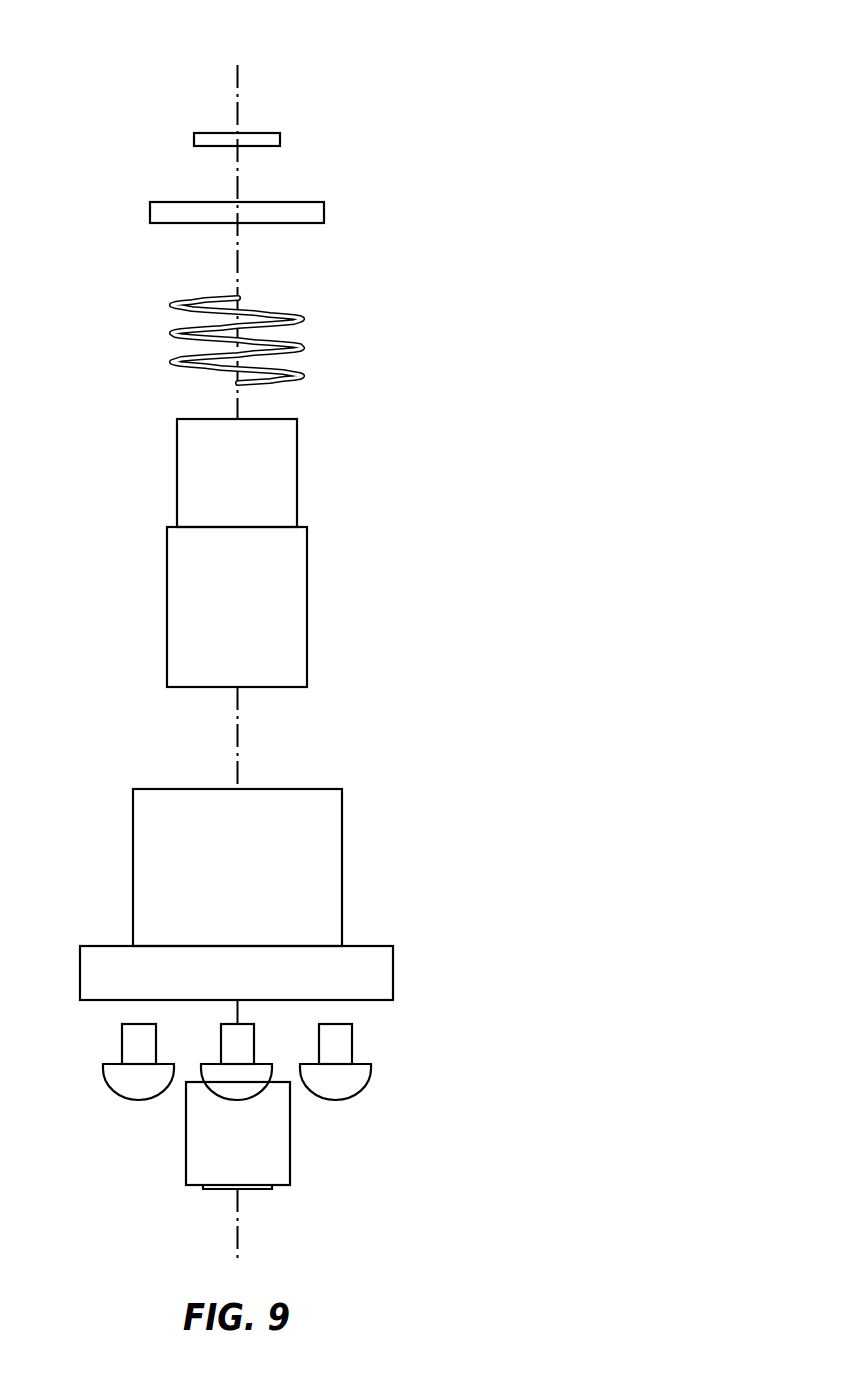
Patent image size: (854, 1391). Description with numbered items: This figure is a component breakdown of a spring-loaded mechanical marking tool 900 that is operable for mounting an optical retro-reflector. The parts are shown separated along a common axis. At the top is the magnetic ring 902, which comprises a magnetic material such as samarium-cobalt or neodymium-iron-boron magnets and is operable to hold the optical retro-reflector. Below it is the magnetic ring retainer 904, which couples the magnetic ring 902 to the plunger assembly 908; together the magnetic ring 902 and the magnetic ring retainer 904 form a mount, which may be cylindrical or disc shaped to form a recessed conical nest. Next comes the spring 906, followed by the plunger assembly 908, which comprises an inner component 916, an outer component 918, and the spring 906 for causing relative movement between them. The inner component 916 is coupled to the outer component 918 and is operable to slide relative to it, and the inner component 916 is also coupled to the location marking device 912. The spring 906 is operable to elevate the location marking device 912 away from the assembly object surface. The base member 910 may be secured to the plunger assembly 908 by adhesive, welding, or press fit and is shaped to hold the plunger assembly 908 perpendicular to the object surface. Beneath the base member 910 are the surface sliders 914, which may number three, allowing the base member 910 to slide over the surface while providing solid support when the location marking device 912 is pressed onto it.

The spring-loaded mechanical marking tool 900 is at (399, 43).
The magnetic ring 902 is at (280, 138).
The magnetic ring retainer 904 is at (324, 212).
The spring 906 is at (303, 345).
The plunger assembly 908 is at (316, 553).
The inner component 916 is at (298, 468).
The outer component 918 is at (308, 642).
The base member 910 is at (372, 880).
The location marking device 912 is at (305, 1163).
The surface sliders 914 is at (371, 1073).